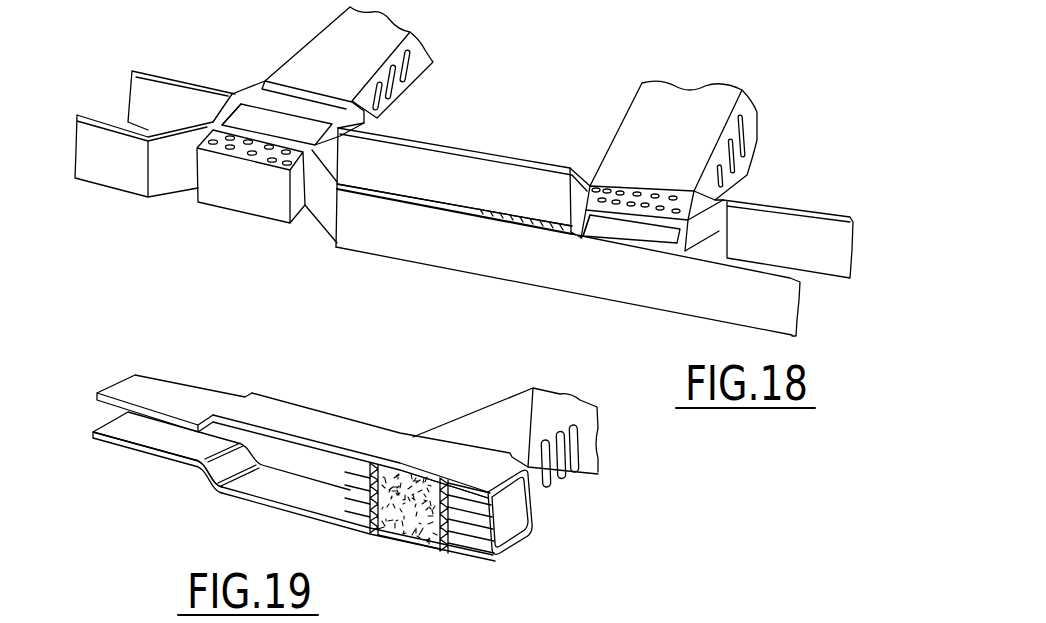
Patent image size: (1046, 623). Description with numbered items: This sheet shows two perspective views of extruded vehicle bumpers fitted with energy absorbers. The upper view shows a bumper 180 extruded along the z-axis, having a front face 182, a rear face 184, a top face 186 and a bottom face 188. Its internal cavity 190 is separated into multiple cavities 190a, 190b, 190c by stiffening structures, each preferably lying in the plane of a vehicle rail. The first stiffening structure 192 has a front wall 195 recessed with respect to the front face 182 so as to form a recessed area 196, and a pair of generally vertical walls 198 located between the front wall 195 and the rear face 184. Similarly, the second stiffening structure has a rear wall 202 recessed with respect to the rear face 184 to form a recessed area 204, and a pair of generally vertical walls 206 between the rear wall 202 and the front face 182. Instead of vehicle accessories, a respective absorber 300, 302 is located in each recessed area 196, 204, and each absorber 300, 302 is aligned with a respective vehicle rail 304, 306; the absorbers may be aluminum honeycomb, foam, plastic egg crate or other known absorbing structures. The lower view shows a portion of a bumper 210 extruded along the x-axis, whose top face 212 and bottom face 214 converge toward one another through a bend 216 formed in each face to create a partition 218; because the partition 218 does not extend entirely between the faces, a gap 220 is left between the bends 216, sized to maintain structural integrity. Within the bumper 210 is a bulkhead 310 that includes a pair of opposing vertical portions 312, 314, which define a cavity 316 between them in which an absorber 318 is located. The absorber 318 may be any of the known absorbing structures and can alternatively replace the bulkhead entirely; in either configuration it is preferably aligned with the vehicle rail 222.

In FIG. 18, the bumper 180 is at (519, 135).
In FIG. 18, the front face 182 is at (512, 272).
In FIG. 18, the rear face 184 is at (527, 157).
In FIG. 18, the top face 186 is at (366, 124).
In FIG. 18, the bottom face 188 is at (362, 252).
In FIG. 18, the internal cavity 190 is at (450, 180).
In FIG. 18, the cavity 190a is at (137, 102).
In FIG. 18, the cavity 190b is at (487, 202).
In FIG. 18, the cavity 190c is at (803, 232).
In FIG. 18, the first stiffening structure 192 is at (278, 125).
In FIG. 18, the front wall 195 is at (270, 143).
In FIG. 18, the recessed area 196 is at (181, 194).
In FIG. 18, the vertical walls 198 is at (235, 93).
In FIG. 18, the rear wall 202 is at (622, 213).
In FIG. 18, the recessed area 204 is at (708, 198).
In FIG. 18, the vertical walls 206 is at (651, 242).
In FIG. 19, the bumper 210 is at (277, 364).
In FIG. 19, the top face 212 is at (315, 420).
In FIG. 19, the bottom face 214 is at (247, 505).
In FIG. 19, the bend 216 is at (207, 422).
In FIG. 19, the partition 218 is at (188, 462).
In FIG. 19, the gap 220 is at (198, 450).
In FIG. 19, the vehicle rail 222 is at (493, 412).
In FIG. 18, the absorber 300 is at (247, 202).
In FIG. 18, the absorber 302 is at (649, 185).
In FIG. 18, the vehicle rail 304 is at (393, 33).
In FIG. 18, the vehicle rail 306 is at (687, 97).
In FIG. 19, the bulkhead 310 is at (361, 534).
In FIG. 19, the vertical portion 312 is at (385, 480).
In FIG. 19, the vertical portion 314 is at (447, 523).
In FIG. 19, the cavity 316 is at (427, 547).
In FIG. 19, the absorber 318 is at (413, 495).